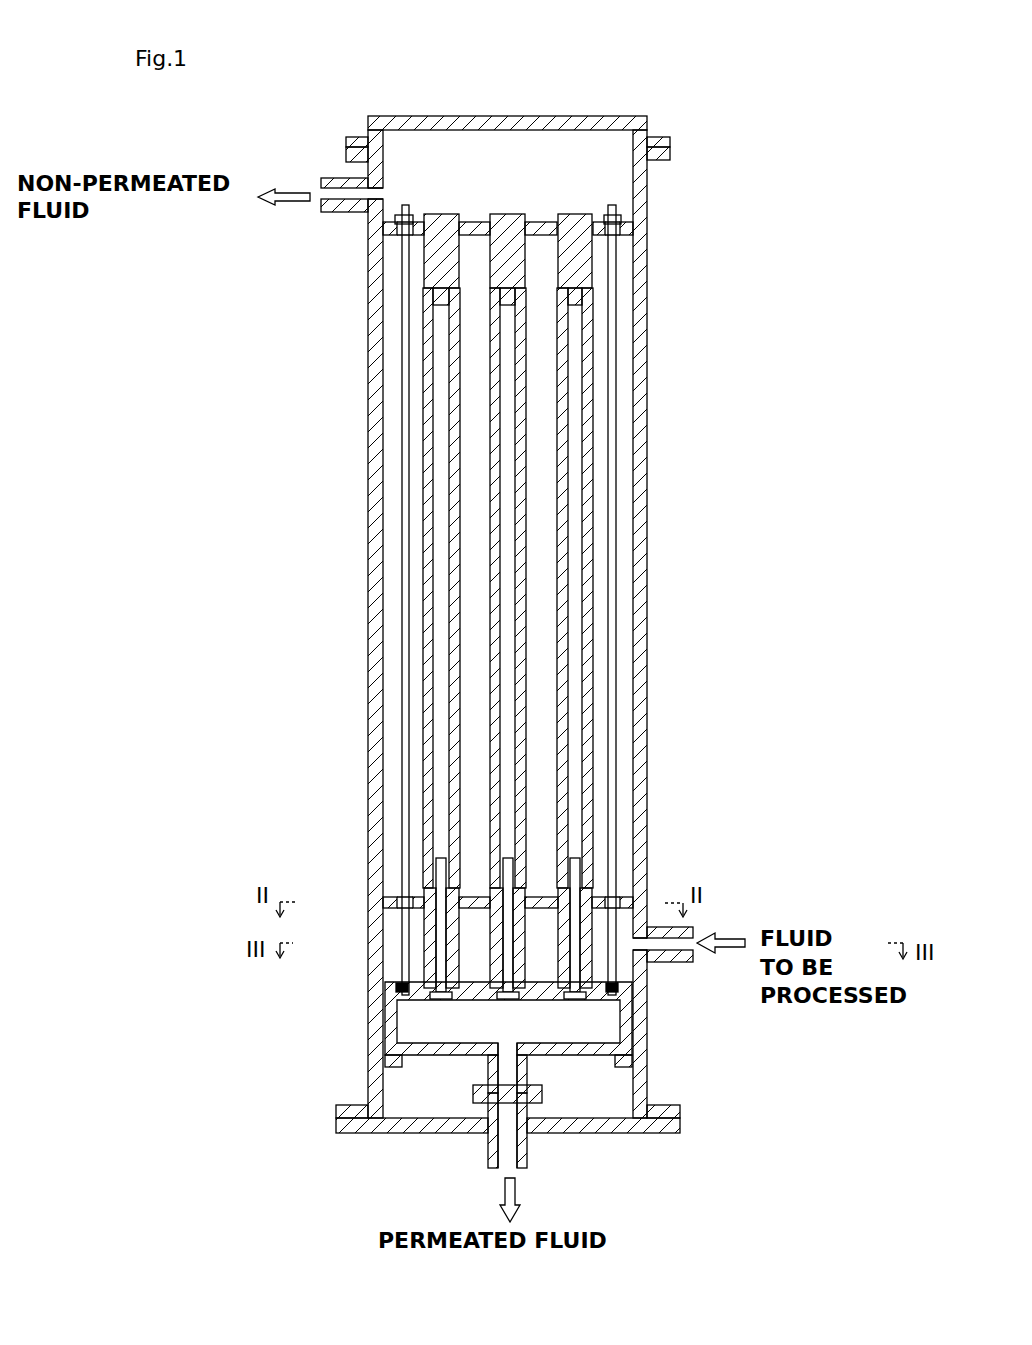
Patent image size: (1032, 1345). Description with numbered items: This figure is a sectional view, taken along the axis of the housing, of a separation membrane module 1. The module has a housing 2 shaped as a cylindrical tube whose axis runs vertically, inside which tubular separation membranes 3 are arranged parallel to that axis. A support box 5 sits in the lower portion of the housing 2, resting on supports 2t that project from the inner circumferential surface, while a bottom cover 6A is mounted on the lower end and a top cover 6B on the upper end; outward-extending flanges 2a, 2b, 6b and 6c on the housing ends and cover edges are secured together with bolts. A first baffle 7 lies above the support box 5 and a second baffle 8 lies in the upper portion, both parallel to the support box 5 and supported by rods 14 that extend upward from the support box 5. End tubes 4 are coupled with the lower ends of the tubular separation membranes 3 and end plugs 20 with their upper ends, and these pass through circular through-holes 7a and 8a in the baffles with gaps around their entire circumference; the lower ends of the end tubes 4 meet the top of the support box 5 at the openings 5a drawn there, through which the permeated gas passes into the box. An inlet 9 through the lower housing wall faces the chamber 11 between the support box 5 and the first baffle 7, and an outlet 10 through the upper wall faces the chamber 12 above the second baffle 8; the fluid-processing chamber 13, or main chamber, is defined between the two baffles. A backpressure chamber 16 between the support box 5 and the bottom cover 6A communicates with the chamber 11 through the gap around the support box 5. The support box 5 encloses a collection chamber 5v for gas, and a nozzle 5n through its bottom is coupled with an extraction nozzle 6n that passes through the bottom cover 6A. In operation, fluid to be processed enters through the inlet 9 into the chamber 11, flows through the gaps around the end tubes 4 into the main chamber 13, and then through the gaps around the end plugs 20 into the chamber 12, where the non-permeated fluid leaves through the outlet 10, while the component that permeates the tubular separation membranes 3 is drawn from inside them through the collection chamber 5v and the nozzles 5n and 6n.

The separation membrane module 1 is at (694, 414).
The housing 2 is at (368, 830).
The flange 2a is at (350, 1110).
The flange 2b is at (346, 156).
The support 2t is at (400, 1068).
The tubular separation membrane 3 is at (487, 432).
The end tube 4 is at (488, 946).
The support box 5 is at (594, 990).
The header opening 5a is at (480, 990).
The nozzle 5n is at (528, 1070).
The collection chamber 5v is at (446, 1048).
The bottom cover 6A is at (412, 1134).
The top cover 6B is at (500, 116).
The flange 6b is at (345, 1130).
The flange 6c is at (346, 140).
The extraction nozzle 6n is at (530, 1155).
The first baffle 7 is at (478, 912).
The through-hole 7a is at (456, 896).
The second baffle 8 is at (476, 222).
The through-hole 8a is at (601, 224).
The inlet 9 is at (688, 930).
The outlet 10 is at (356, 213).
The chamber 11 is at (553, 944).
The chamber 12 is at (560, 150).
The fluid-processing chamber 13 is at (395, 660).
The rod 14 is at (400, 752).
The backpressure chamber 16 is at (572, 1110).
The end plug 20 is at (438, 214).